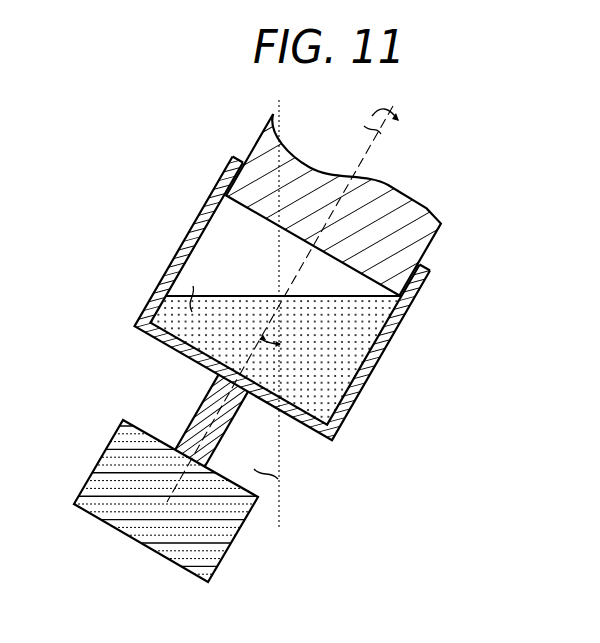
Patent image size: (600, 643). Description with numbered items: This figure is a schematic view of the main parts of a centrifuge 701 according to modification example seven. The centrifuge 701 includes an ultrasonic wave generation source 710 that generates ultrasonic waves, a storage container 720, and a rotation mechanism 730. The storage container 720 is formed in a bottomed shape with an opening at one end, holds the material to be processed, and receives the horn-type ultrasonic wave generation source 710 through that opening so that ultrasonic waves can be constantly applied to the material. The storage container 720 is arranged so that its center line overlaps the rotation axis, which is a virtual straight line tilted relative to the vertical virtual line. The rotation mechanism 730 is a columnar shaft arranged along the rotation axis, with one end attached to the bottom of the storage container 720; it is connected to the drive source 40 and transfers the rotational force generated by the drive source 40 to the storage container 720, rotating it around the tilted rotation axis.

The centrifuge 701 is at (469, 219).
The ultrasonic wave generation source 710 is at (261, 141).
The storage container 720 is at (406, 317).
The rotation mechanism 730 is at (202, 403).
The drive source 40 is at (222, 560).